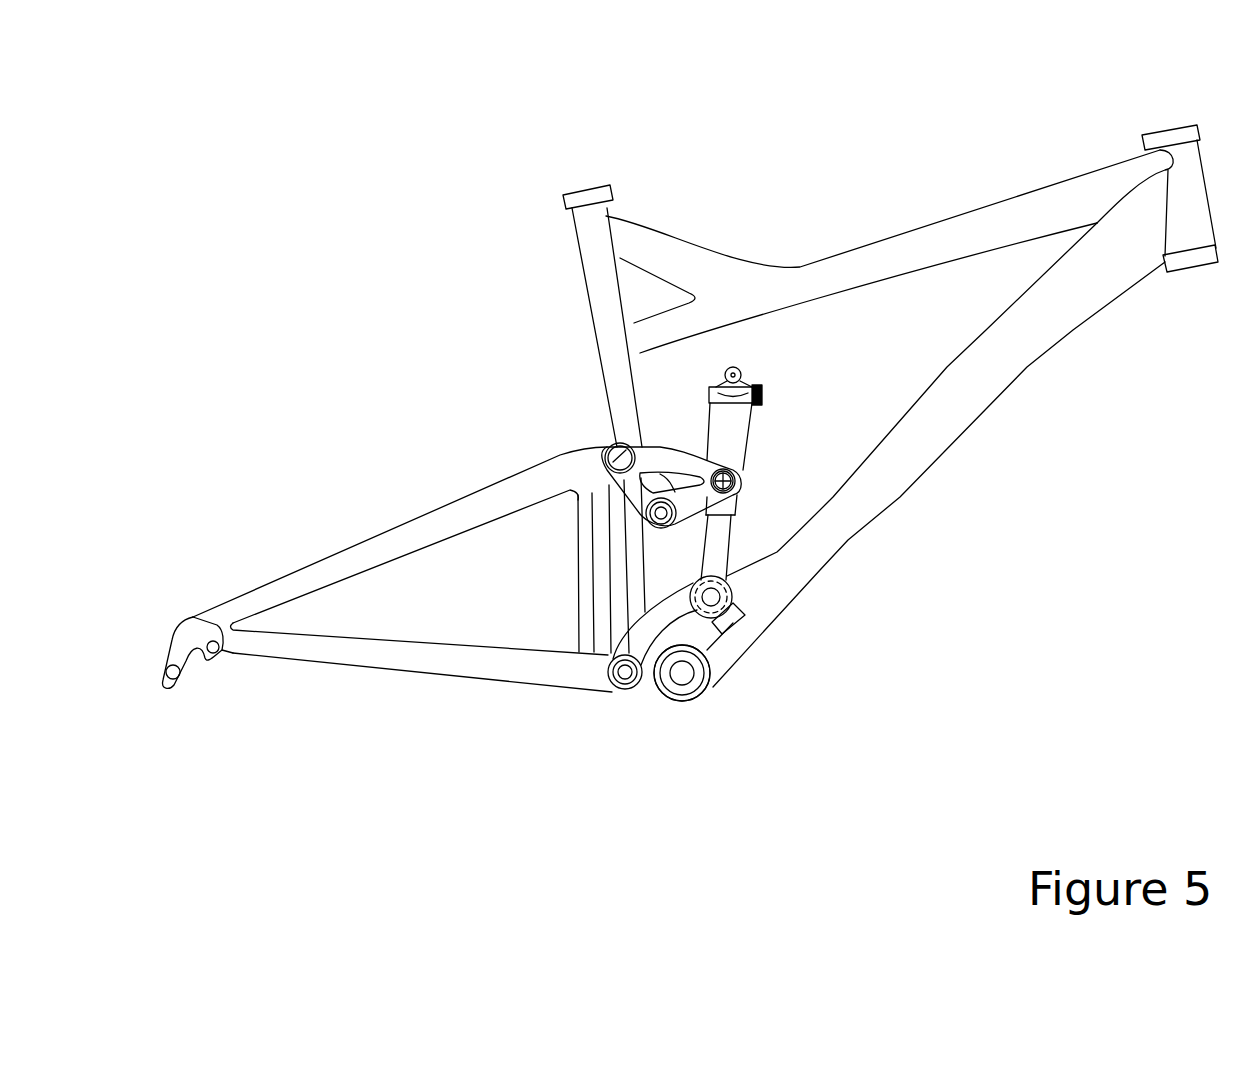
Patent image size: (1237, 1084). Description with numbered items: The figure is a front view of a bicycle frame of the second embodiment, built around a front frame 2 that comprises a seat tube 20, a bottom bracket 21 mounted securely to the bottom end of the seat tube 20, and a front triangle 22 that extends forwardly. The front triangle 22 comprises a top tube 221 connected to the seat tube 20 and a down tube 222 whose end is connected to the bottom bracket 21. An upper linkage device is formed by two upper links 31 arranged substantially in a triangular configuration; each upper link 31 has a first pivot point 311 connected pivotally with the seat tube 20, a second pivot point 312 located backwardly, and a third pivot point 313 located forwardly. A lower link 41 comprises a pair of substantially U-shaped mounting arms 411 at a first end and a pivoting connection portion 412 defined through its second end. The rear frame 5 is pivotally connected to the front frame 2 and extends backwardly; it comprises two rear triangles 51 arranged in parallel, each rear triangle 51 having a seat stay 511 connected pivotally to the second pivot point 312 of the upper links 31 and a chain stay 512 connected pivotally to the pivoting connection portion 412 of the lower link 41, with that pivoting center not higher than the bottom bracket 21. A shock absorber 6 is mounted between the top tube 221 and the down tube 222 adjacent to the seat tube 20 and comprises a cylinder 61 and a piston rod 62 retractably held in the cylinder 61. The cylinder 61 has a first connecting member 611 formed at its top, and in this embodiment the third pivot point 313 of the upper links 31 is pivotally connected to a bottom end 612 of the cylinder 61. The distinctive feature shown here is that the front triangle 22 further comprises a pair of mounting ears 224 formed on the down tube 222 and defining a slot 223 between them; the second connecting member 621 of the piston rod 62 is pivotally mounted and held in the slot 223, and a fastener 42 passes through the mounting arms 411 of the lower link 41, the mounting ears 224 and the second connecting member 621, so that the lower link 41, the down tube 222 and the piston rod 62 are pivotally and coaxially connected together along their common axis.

The front frame 2 is at (938, 220).
The seat tube 20 is at (576, 236).
The bottom bracket 21 is at (694, 700).
The front triangle 22 is at (1076, 345).
The top tube 221 is at (1012, 210).
The down tube 222 is at (1032, 362).
The slot 223 is at (737, 598).
The mounting ears 224 is at (746, 628).
The upper link 31 is at (703, 445).
The first pivot point 311 is at (645, 511).
The second pivot point 312 is at (607, 452).
The third pivot point 313 is at (733, 490).
The lower link 41 is at (655, 602).
The mounting arms 411 is at (672, 700).
The pivoting connection portion 412 is at (604, 694).
The fastener 42 is at (722, 632).
The rear frame 5 is at (377, 530).
The rear triangle 51 is at (372, 668).
The seat stay 511 is at (424, 522).
The chain stay 512 is at (460, 662).
The shock absorber 6 is at (745, 482).
The cylinder 61 is at (760, 408).
The first connecting member 611 is at (735, 366).
The bottom end 612 is at (745, 482).
The piston rod 62 is at (730, 533).
The second connecting member 621 is at (735, 589).